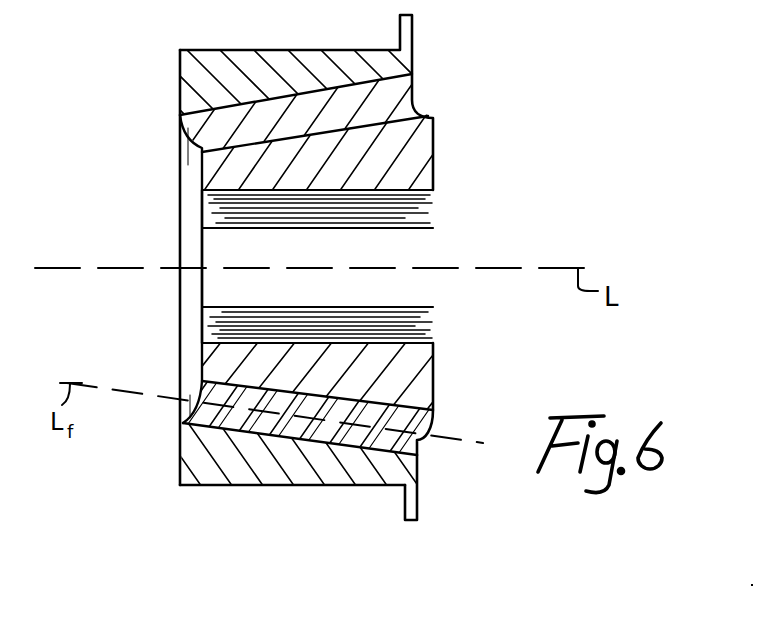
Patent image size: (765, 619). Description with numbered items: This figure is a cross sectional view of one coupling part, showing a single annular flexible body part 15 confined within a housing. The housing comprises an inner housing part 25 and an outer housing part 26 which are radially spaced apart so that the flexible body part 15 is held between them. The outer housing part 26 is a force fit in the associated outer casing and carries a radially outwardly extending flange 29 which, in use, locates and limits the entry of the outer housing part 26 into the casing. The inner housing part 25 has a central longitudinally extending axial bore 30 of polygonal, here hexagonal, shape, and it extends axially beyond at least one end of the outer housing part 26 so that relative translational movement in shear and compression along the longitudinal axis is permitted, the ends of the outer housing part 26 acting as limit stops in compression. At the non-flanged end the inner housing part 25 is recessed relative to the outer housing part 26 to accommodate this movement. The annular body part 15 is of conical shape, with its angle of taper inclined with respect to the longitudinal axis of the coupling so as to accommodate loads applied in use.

The flexible body part 15 is at (397, 100).
The inner housing part 25 is at (428, 375).
The outer housing part 26 is at (317, 463).
The flange 29 is at (427, 497).
The axial bore 30 is at (418, 238).